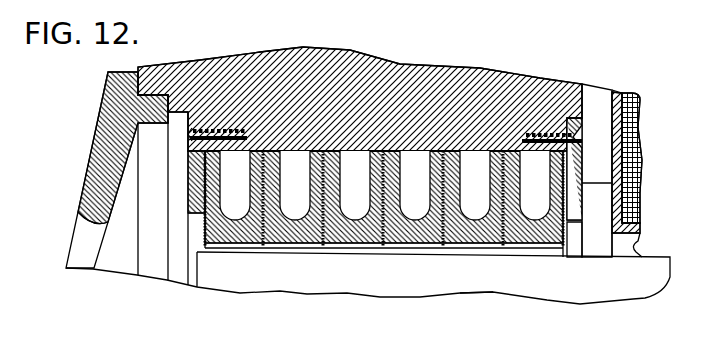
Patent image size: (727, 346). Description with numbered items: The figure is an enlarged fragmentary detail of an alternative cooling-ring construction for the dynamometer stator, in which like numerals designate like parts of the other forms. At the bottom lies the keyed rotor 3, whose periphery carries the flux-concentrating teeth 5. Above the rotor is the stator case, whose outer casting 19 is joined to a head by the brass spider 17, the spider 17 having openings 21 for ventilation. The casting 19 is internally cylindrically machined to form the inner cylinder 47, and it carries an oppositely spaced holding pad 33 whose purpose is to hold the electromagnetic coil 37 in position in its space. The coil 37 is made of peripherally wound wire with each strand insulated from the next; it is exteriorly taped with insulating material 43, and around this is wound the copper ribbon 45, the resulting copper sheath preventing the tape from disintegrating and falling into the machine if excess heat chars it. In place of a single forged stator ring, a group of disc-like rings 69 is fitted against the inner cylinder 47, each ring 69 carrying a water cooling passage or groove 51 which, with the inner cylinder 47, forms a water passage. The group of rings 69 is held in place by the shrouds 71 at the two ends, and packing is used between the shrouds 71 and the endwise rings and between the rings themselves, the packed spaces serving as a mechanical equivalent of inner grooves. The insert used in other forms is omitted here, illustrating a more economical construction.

The rotor 3 is at (628, 288).
The flux-concentrating teeth 5 is at (500, 290).
The brass spider 17 is at (132, 160).
The outer casting 19 is at (348, 68).
The opening 21 is at (83, 246).
The holding pad 33 is at (596, 178).
The electromagnetic coil 37 is at (632, 180).
The insulating material 43 is at (618, 133).
The copper ribbon 45 is at (642, 249).
The inner cylinder 47 is at (420, 152).
The groove 51 is at (237, 189).
The disc-like ring 69 is at (243, 247).
The shroud 71 is at (188, 158).